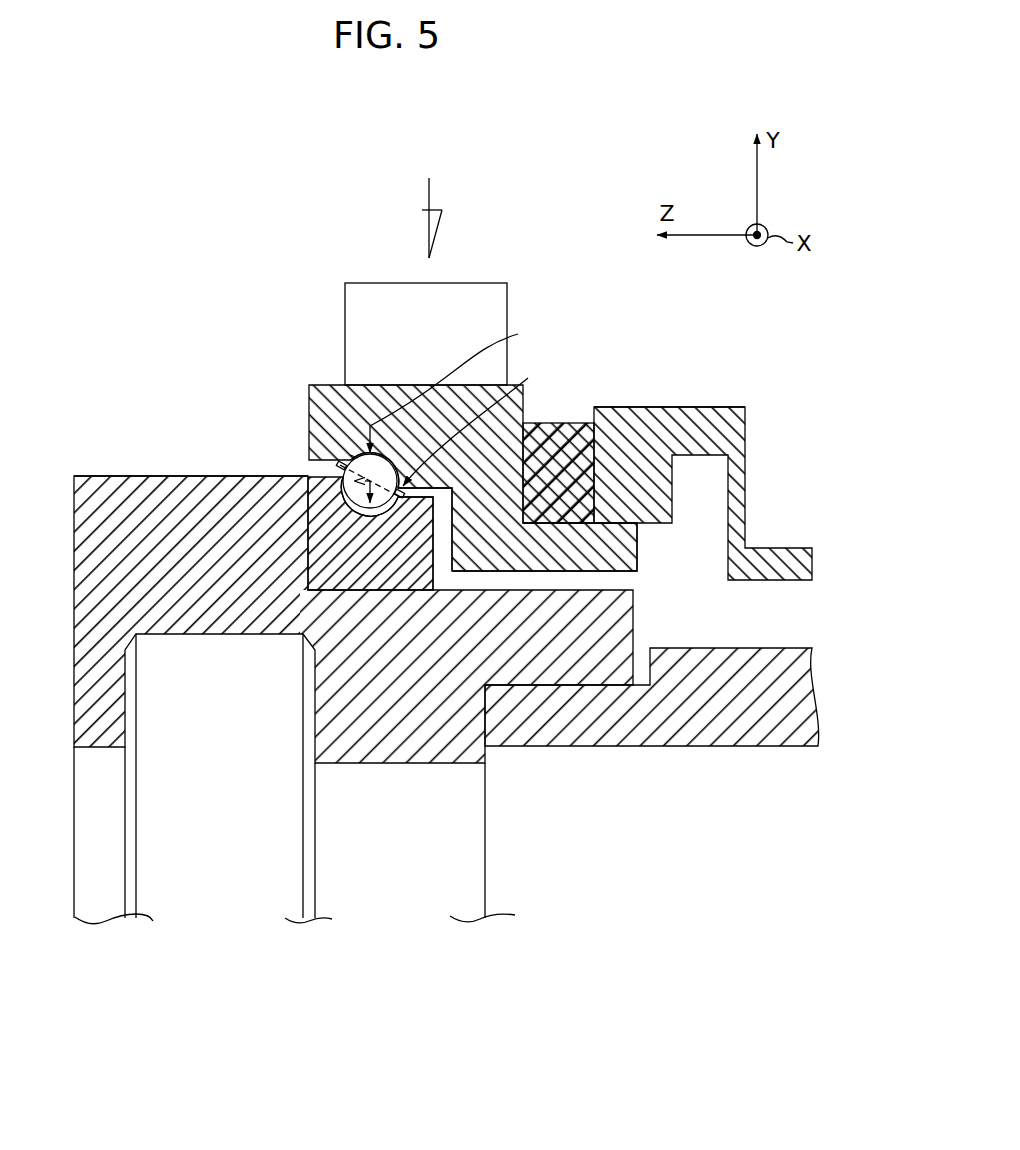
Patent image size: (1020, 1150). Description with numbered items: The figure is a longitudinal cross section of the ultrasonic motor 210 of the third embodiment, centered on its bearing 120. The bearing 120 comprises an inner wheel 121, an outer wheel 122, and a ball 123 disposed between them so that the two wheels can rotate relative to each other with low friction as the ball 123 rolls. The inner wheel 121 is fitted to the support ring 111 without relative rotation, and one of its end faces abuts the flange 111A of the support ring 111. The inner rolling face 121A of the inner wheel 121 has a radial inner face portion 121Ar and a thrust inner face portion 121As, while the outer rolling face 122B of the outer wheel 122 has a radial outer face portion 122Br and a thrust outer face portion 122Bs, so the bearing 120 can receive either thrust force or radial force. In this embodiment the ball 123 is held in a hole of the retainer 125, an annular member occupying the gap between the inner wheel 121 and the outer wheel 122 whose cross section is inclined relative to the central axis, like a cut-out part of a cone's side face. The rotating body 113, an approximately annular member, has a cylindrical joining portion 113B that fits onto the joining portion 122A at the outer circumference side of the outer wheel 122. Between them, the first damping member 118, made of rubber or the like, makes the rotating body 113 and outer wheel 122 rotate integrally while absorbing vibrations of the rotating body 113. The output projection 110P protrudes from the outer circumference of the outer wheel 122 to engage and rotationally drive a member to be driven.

The support ring 111 is at (68, 488).
The flange 111A is at (100, 476).
The bearing 120 is at (168, 281).
The inner wheel 121 is at (306, 537).
The inner rolling face 121A is at (193, 428).
The thrust inner face portion 121As is at (342, 468).
The radial inner face portion 121Ar is at (400, 500).
The outer wheel 122 is at (306, 401).
The joining portion 122A is at (572, 523).
The outer rolling face 122B is at (291, 274).
The thrust outer face portion 122Bs is at (355, 458).
The radial outer face portion 122Br is at (350, 455).
The ball 123 is at (340, 465).
The retainer 125 is at (433, 497).
The first damping member 118 is at (574, 421).
The rotating body 113 is at (730, 402).
The joining portion 113B is at (675, 407).
The output projection 110P is at (508, 296).
The ultrasonic motor 210 is at (499, 240).